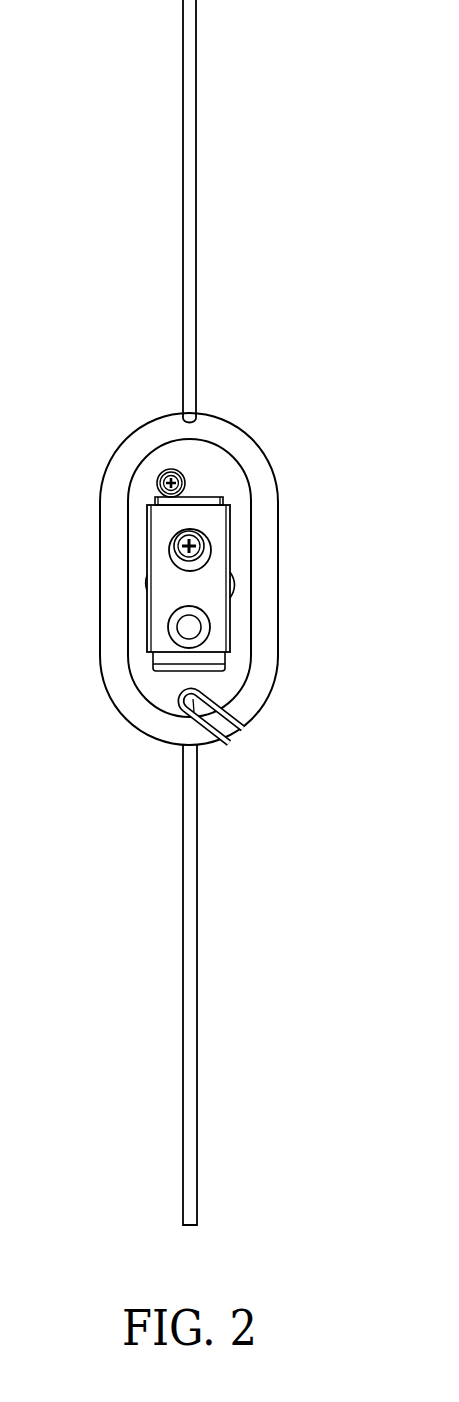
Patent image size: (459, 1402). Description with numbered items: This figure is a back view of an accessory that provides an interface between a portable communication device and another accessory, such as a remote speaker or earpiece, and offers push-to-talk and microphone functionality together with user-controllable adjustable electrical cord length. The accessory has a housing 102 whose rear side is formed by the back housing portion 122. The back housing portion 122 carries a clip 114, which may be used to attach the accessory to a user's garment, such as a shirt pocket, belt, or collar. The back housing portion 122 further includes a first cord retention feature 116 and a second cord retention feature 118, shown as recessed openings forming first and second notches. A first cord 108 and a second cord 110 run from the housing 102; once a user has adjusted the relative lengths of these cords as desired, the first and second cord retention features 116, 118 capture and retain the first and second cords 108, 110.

The housing 102 is at (114, 423).
The first cord 108 is at (196, 202).
The second cord 110 is at (197, 1017).
The clip 114 is at (216, 625).
The first cord retention feature 116 is at (198, 410).
The second cord retention feature 118 is at (233, 730).
The back housing portion 122 is at (277, 578).